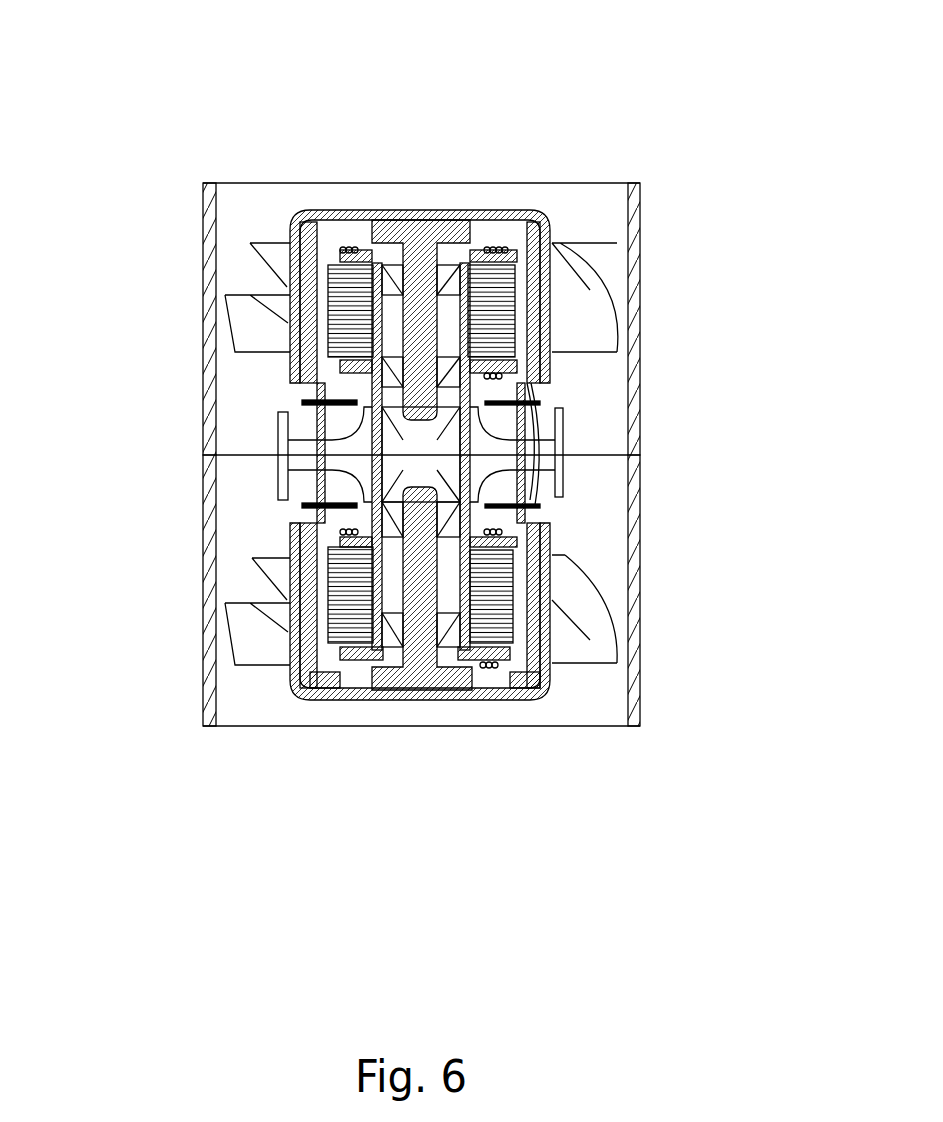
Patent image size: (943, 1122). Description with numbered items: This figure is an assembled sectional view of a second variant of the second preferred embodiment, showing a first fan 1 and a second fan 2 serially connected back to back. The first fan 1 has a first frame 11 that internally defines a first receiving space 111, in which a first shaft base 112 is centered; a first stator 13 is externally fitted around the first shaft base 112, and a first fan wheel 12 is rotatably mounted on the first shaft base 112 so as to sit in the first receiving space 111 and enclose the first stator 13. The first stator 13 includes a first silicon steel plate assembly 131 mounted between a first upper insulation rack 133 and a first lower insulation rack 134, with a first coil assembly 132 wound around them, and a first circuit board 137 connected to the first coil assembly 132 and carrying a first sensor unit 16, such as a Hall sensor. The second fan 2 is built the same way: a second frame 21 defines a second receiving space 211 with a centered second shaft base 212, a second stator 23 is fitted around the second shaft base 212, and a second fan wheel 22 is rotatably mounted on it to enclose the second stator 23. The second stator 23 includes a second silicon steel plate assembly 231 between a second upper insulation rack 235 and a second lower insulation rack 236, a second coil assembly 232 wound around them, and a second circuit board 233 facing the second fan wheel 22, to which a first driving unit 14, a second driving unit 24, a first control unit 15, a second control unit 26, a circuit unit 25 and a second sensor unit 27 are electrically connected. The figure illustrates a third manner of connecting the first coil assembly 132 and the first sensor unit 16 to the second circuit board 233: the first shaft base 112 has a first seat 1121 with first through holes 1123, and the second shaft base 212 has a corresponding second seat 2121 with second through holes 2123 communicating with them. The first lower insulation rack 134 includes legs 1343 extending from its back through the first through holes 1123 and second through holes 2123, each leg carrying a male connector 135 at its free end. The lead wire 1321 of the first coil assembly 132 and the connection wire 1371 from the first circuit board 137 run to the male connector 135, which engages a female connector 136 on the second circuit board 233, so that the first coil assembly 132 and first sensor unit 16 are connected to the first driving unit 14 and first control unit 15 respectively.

The first fan 1 is at (676, 150).
The first frame 11 is at (640, 205).
The first receiving space 111 is at (247, 203).
The first shaft base 112 is at (750, 385).
The first seat 1121 is at (590, 432).
The first through hole 1123 is at (575, 410).
The first fan wheel 12 is at (330, 213).
The first stator 13 is at (325, 287).
The first silicon steel plate assembly 131 is at (530, 283).
The first coil assembly 132 is at (512, 243).
The first upper insulation rack 133 is at (320, 233).
The first lower insulation rack 134 is at (303, 317).
The legs 1343 is at (300, 375).
The male connector 135 is at (330, 468).
The female connector 136 is at (302, 500).
The first circuit board 137 is at (300, 394).
The connection wire 1371 is at (560, 380).
The lead wire 1321 is at (565, 390).
The first driving unit 14 is at (545, 478).
The first control unit 15 is at (575, 500).
The first sensor unit 16 is at (305, 403).
The second fan 2 is at (670, 732).
The second frame 21 is at (640, 693).
The second receiving space 211 is at (240, 702).
The second shaft base 212 is at (780, 455).
The second seat 2121 is at (580, 455).
The second through hole 2123 is at (585, 478).
The second fan wheel 22 is at (515, 693).
The second stator 23 is at (518, 588).
The second silicon steel plate assembly 231 is at (512, 607).
The second coil assembly 232 is at (487, 697).
The second circuit board 233 is at (308, 508).
The second upper insulation rack 235 is at (305, 677).
The second lower insulation rack 236 is at (318, 540).
The second driving unit 24 is at (320, 453).
The circuit unit 25 is at (305, 505).
The second control unit 26 is at (307, 447).
The second sensor unit 27 is at (312, 520).